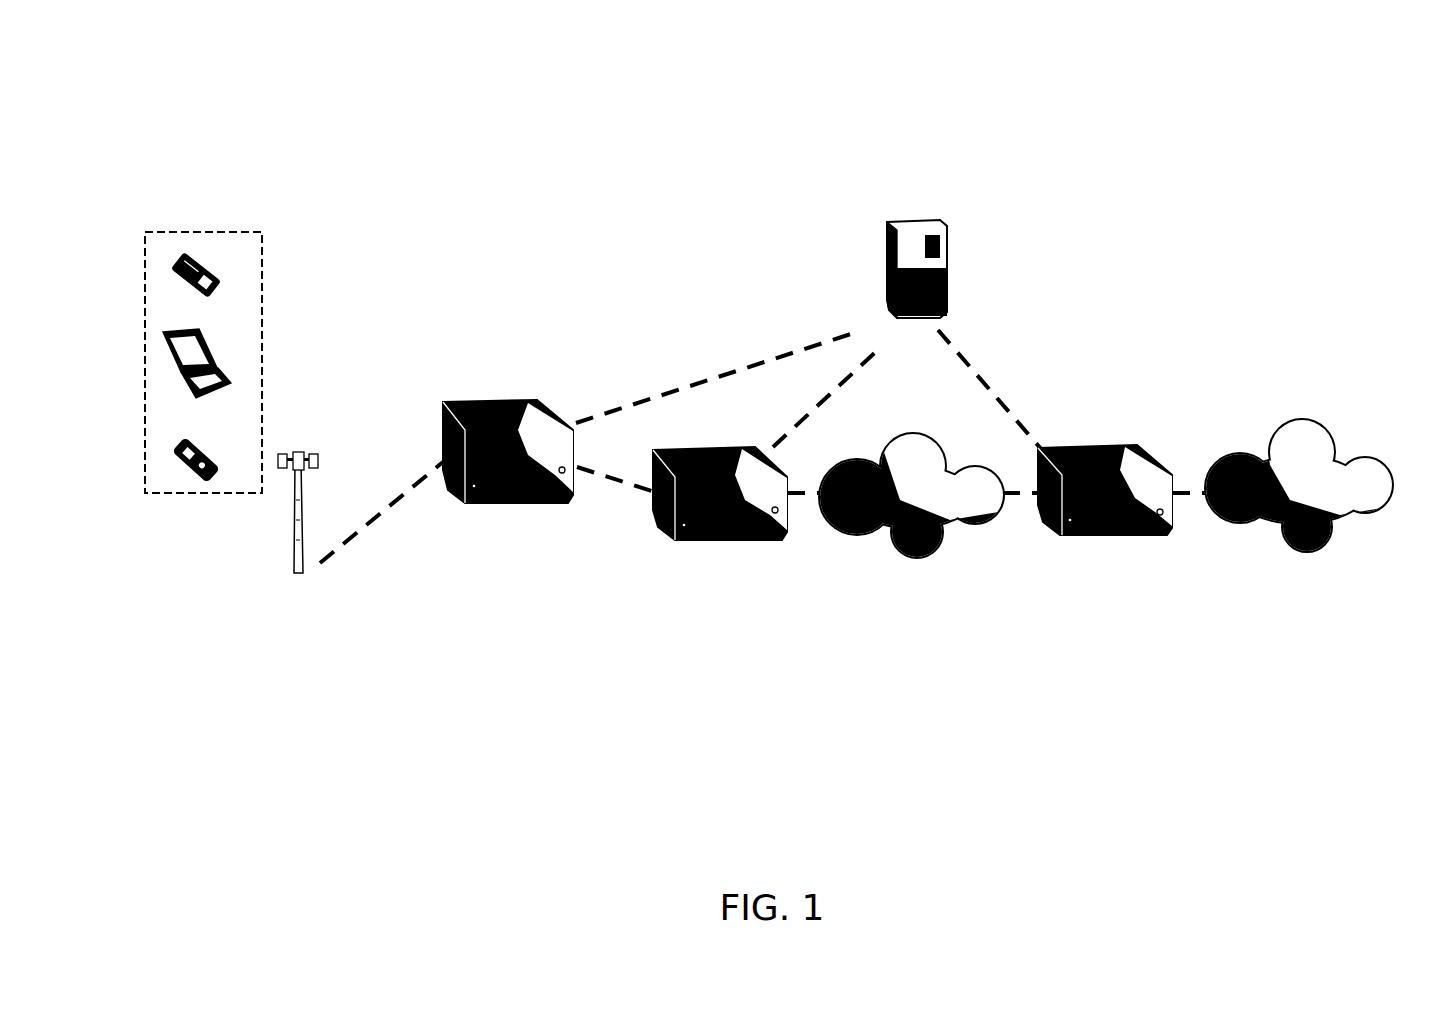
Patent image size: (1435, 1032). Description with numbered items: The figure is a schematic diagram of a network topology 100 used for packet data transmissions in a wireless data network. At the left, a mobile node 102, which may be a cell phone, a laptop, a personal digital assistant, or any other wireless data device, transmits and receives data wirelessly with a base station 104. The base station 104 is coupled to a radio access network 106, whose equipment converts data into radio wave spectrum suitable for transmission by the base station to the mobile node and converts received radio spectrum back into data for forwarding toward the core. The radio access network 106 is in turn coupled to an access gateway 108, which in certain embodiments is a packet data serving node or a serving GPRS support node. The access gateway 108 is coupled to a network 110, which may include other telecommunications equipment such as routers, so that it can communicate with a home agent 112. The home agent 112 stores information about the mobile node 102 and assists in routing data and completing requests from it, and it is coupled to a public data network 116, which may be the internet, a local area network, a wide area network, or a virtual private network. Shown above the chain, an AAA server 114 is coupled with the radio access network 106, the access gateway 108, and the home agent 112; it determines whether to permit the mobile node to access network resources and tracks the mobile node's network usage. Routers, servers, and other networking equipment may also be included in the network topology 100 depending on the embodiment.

The network topology 100 is at (1201, 85).
The mobile node 102 is at (167, 493).
The base station 104 is at (290, 553).
The radio access network 106 is at (482, 400).
The access gateway 108 is at (703, 540).
The network 110 is at (937, 553).
The home agent 112 is at (1115, 533).
The AAA server 114 is at (905, 220).
The public data network 116 is at (1290, 428).